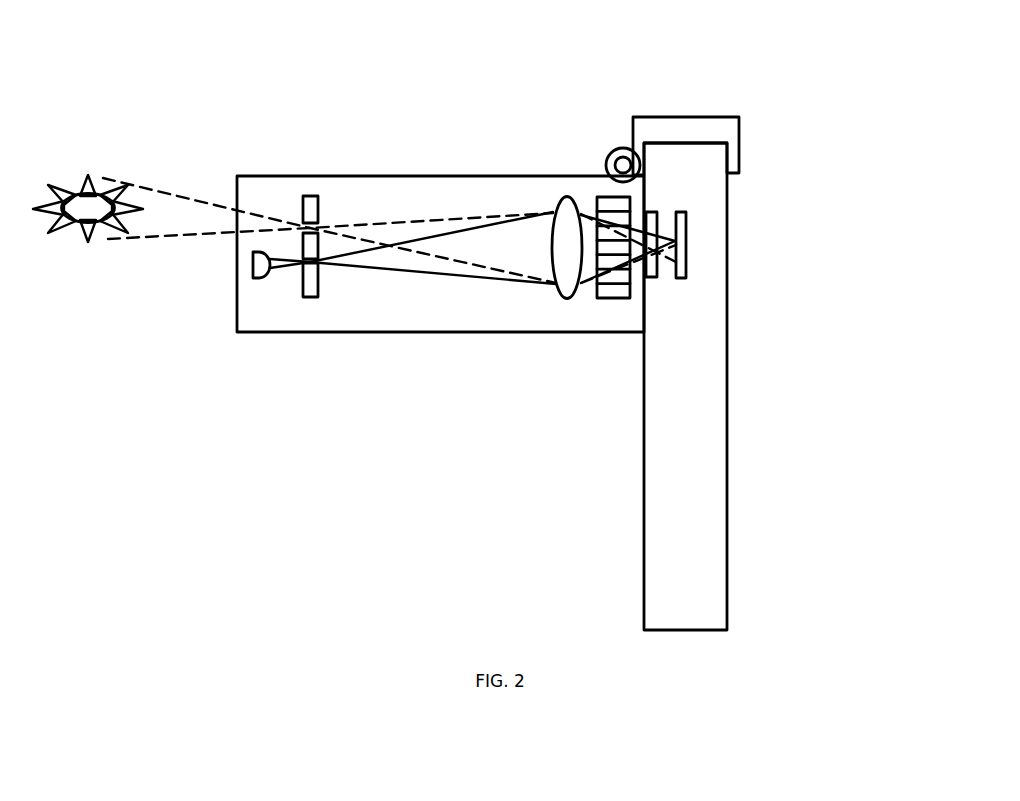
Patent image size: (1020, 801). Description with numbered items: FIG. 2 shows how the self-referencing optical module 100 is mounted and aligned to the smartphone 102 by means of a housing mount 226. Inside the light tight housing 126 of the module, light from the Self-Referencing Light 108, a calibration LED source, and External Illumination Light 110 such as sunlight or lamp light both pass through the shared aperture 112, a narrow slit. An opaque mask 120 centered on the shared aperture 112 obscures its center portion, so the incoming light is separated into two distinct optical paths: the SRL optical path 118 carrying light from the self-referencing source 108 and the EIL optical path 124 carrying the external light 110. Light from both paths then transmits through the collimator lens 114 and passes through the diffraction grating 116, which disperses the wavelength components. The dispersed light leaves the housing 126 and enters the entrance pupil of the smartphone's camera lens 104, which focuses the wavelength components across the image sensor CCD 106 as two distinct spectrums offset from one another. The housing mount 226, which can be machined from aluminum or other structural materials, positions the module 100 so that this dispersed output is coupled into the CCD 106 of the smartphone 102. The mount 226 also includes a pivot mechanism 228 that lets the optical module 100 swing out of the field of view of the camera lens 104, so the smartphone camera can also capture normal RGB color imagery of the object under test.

The self-referencing optical module 100 is at (190, 486).
The smartphone 102 is at (728, 505).
The camera lens 104 is at (650, 277).
The image sensor (CCD) 106 is at (687, 213).
The calibration LED light source (Self-Referencing Light) 108 is at (253, 270).
The External Illumination Light (EIL) 110 is at (95, 192).
The shared aperture 112 is at (305, 196).
The collimator lens 114 is at (553, 297).
The diffraction grating 116 is at (600, 300).
The SRL optical path 118 is at (410, 271).
The opaque mask 120 is at (318, 250).
The EIL optical path 124 is at (482, 213).
The light tight housing 126 is at (530, 332).
The housing mount 226 is at (697, 117).
The mechanism 228 is at (623, 148).